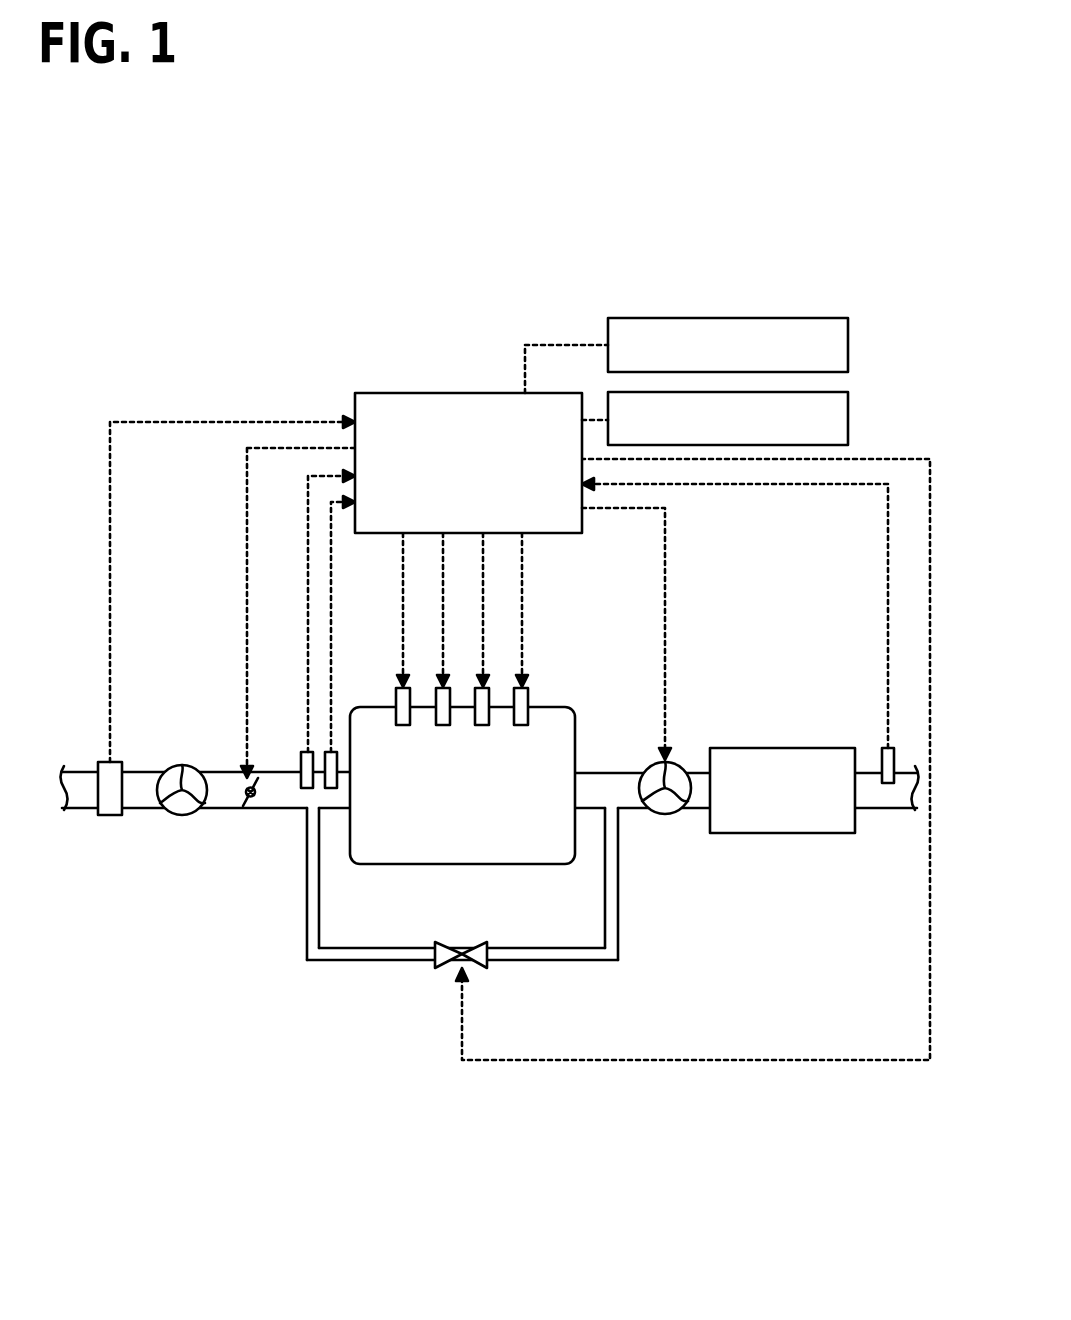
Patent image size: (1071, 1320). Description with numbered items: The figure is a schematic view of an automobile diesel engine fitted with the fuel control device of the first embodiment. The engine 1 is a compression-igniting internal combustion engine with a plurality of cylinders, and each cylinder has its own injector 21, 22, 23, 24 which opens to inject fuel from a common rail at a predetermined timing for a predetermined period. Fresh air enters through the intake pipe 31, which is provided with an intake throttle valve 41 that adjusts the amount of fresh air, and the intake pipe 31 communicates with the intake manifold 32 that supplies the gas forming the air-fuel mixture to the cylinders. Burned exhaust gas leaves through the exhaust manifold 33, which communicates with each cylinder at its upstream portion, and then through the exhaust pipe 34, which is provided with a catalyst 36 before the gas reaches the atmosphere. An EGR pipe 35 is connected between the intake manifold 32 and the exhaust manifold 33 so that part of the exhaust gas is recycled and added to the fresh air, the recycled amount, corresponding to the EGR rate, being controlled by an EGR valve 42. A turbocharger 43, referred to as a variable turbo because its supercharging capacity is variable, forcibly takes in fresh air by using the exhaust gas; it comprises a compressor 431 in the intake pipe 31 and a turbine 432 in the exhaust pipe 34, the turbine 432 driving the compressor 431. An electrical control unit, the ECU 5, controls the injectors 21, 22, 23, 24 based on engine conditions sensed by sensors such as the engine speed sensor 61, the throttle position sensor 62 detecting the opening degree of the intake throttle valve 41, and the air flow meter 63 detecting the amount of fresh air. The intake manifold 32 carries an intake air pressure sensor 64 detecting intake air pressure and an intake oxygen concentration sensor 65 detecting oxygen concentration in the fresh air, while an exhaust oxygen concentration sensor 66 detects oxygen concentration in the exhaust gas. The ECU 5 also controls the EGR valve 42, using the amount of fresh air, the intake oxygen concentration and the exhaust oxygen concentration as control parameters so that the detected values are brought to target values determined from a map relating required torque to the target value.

The engine 1 is at (465, 864).
The electrical control unit (ECU) 5 is at (447, 393).
The injector 21 is at (398, 703).
The injector 22 is at (452, 695).
The injector 23 is at (490, 695).
The injector 24 is at (528, 702).
The intake pipe 31 is at (147, 808).
The intake manifold 32 is at (333, 810).
The exhaust manifold 33 is at (592, 808).
The exhaust pipe 34 is at (695, 770).
The EGR pipe 35 is at (557, 960).
The catalyst 36 is at (776, 748).
The intake throttle valve 41 is at (258, 808).
The EGR valve 42 is at (455, 968).
The turbocharger (variable turbo) 43 is at (424, 993).
The compressor 431 is at (183, 815).
The turbine 432 is at (663, 815).
The engine speed sensor 61 is at (848, 420).
The throttle position sensor 62 is at (848, 342).
The air flow meter 63 is at (110, 815).
The intake air pressure sensor 64 is at (302, 752).
The intake oxygen concentration sensor 65 is at (325, 752).
The exhaust oxygen concentration sensor 66 is at (880, 770).